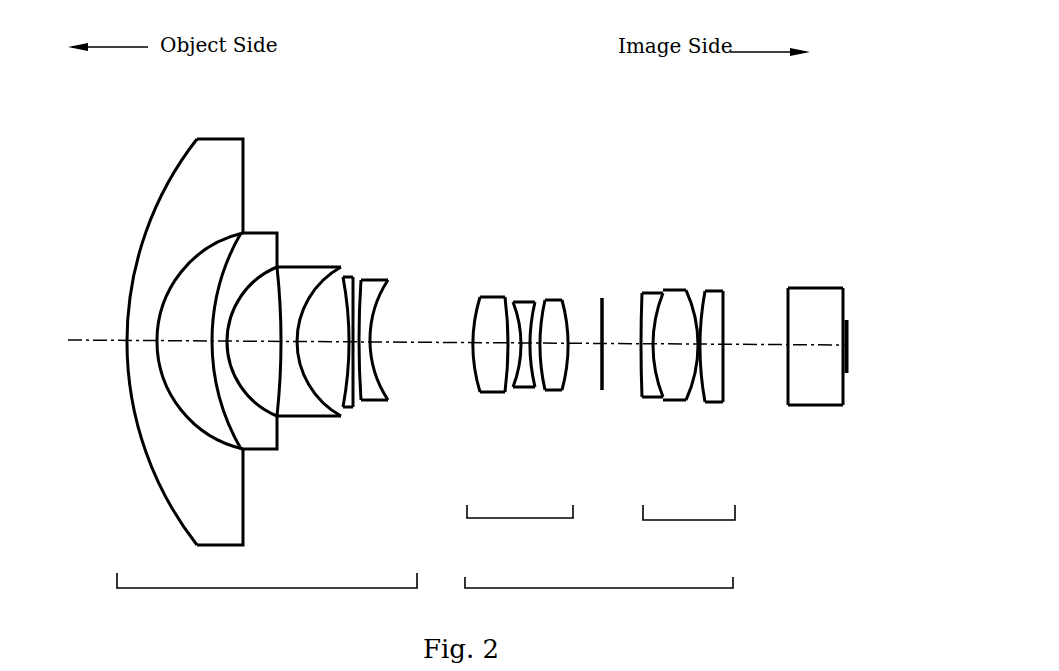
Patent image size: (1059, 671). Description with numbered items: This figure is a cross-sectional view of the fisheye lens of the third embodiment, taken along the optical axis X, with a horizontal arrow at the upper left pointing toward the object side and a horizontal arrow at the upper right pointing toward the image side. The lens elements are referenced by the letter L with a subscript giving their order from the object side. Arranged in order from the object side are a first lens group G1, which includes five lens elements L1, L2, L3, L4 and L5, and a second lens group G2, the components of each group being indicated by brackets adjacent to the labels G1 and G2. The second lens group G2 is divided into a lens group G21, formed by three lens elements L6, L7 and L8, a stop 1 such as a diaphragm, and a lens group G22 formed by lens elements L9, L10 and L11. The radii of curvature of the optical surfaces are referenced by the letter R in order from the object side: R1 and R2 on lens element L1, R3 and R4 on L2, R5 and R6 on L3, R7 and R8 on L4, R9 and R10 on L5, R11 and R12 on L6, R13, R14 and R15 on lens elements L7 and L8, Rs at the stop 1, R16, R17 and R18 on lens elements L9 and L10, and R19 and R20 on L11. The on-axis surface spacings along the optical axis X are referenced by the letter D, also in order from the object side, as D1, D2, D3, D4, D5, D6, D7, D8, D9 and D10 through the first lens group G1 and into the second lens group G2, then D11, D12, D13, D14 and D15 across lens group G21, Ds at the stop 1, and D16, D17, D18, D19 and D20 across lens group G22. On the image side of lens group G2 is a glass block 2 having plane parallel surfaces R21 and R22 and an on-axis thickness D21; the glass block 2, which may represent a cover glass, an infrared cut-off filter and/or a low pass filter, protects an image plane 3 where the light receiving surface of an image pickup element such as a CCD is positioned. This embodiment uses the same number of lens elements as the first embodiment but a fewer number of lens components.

The optical axis X is at (93, 341).
The stop 1 is at (616, 295).
The glass block 2 is at (821, 302).
The image plane 3 is at (850, 334).
The first lens group G1 is at (267, 597).
The second lens group G2 is at (599, 601).
The lens group G21 is at (520, 528).
The lens group G22 is at (689, 528).
The first lens element L1 is at (180, 305).
The second lens element L2 is at (260, 286).
The third lens element L3 is at (310, 289).
The fourth lens element L4 is at (386, 296).
The fifth lens element L5 is at (412, 306).
The sixth lens element L6 is at (486, 305).
The seventh lens element L7 is at (532, 291).
The eighth lens element L8 is at (570, 293).
The ninth lens element L9 is at (649, 292).
The tenth lens element L10 is at (690, 299).
The eleventh lens element L11 is at (739, 303).
The radius of curvature of the first optical surface R1 is at (186, 147).
The radius of curvature of the second optical surface R2 is at (233, 233).
The radius of curvature of the third optical surface R3 is at (247, 228).
The radius of curvature of the fourth optical surface R4 is at (271, 268).
The radius of curvature of the fifth optical surface R5 is at (280, 270).
The radius of curvature of the sixth optical surface R6 is at (336, 272).
The radius of curvature of the seventh optical surface R7 is at (349, 288).
The radius of curvature of the eighth optical surface R8 is at (389, 291).
The radius of curvature of the ninth optical surface R9 is at (370, 332).
The radius of curvature of the tenth optical surface R10 is at (394, 333).
The radius of curvature of the eleventh optical surface R11 is at (477, 298).
The radius of curvature of the twelfth optical surface R12 is at (482, 244).
The radius of curvature of the thirteenth optical surface R13 is at (530, 300).
The radius of curvature of the fourteenth optical surface R14 is at (549, 300).
The radius of curvature of the fifteenth optical surface R15 is at (570, 329).
The radius of curvature of the sixteenth optical surface R16 is at (642, 296).
The radius of curvature of the seventeenth optical surface R17 is at (662, 292).
The radius of curvature of the eighteenth optical surface R18 is at (690, 292).
The radius of curvature of the nineteenth optical surface R19 is at (716, 294).
The radius of curvature of the twentieth optical surface R20 is at (728, 316).
The radius of curvature of the twenty-first optical surface R21 is at (786, 288).
The radius of curvature of the twenty-second optical surface R22 is at (845, 290).
The aperture stop surface Rs is at (604, 327).
The first on-axis surface spacing D1 is at (143, 341).
The second on-axis surface spacing D2 is at (198, 343).
The third on-axis surface spacing D3 is at (267, 347).
The fourth on-axis surface spacing D4 is at (265, 343).
The fifth on-axis surface spacing D5 is at (293, 343).
The sixth on-axis surface spacing D6 is at (330, 343).
The seventh on-axis surface spacing D7 is at (352, 345).
The eighth on-axis surface spacing D8 is at (366, 345).
The ninth on-axis surface spacing D9 is at (420, 347).
The tenth on-axis surface spacing D10 is at (490, 345).
The eleventh on-axis surface spacing D11 is at (505, 345).
The twelfth on-axis surface spacing D12 is at (528, 345).
The thirteenth on-axis surface spacing D13 is at (538, 350).
The fourteenth on-axis surface spacing D14 is at (550, 350).
The fifteenth on-axis surface spacing D15 is at (562, 350).
The axial distance from stop Ds is at (620, 345).
The sixteenth on-axis surface spacing D16 is at (660, 347).
The seventeenth on-axis surface spacing D17 is at (673, 347).
The eighteenth on-axis surface spacing D18 is at (695, 347).
The nineteenth on-axis surface spacing D19 is at (708, 350).
The twentieth on-axis surface spacing D20 is at (752, 347).
The twenty-first on-axis surface spacing D21 is at (812, 345).